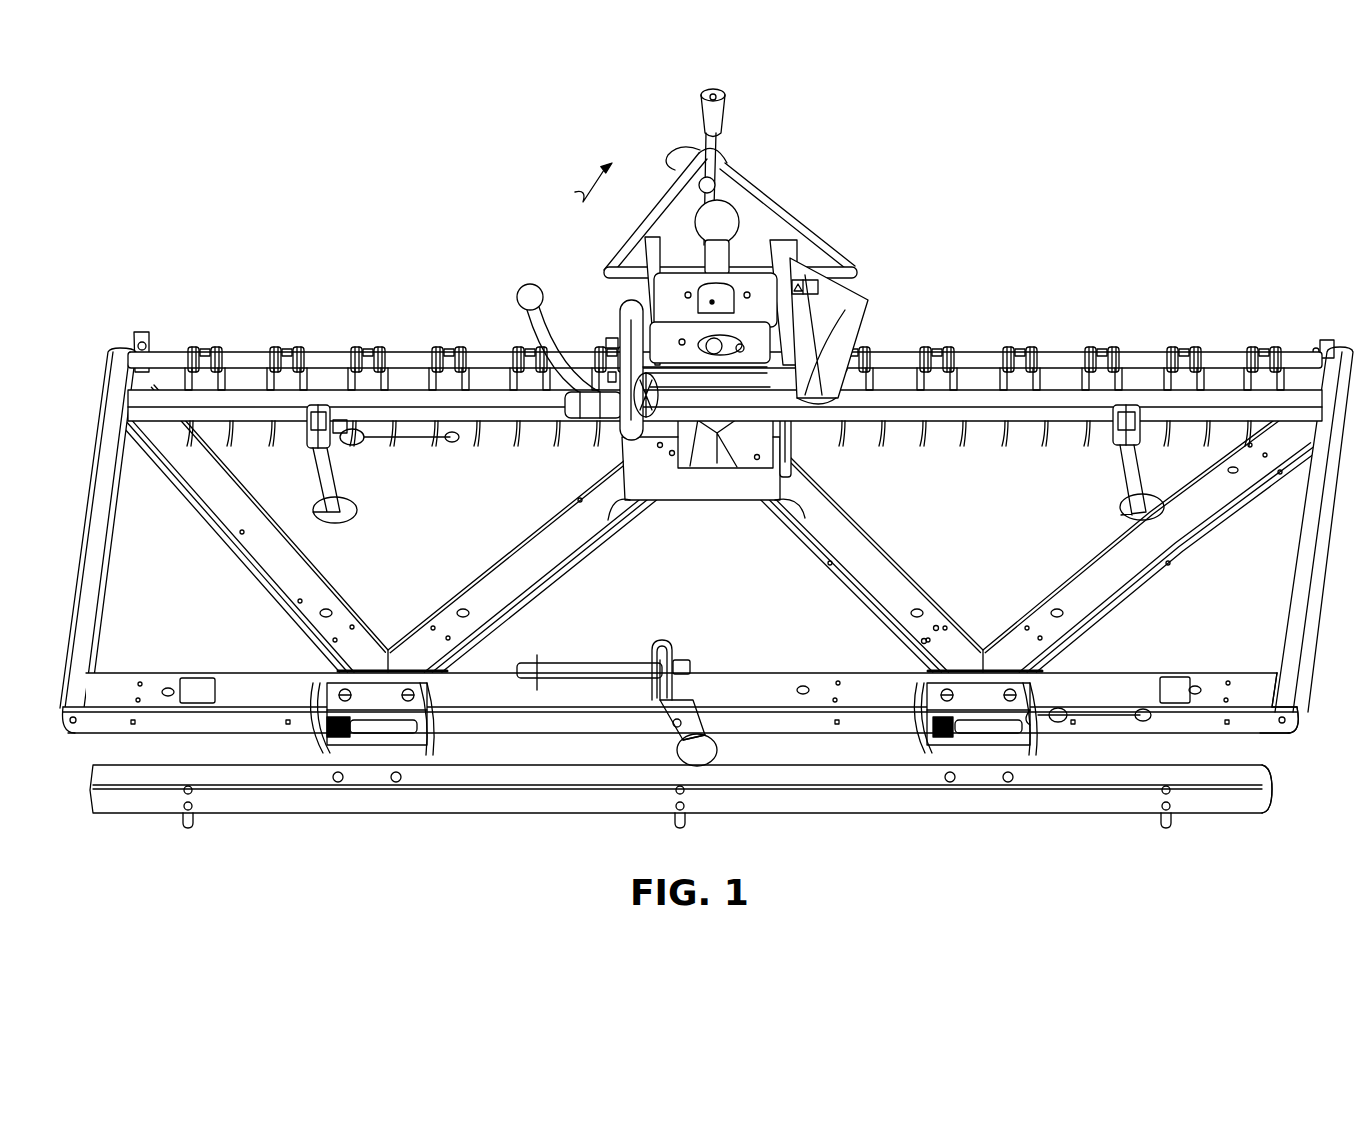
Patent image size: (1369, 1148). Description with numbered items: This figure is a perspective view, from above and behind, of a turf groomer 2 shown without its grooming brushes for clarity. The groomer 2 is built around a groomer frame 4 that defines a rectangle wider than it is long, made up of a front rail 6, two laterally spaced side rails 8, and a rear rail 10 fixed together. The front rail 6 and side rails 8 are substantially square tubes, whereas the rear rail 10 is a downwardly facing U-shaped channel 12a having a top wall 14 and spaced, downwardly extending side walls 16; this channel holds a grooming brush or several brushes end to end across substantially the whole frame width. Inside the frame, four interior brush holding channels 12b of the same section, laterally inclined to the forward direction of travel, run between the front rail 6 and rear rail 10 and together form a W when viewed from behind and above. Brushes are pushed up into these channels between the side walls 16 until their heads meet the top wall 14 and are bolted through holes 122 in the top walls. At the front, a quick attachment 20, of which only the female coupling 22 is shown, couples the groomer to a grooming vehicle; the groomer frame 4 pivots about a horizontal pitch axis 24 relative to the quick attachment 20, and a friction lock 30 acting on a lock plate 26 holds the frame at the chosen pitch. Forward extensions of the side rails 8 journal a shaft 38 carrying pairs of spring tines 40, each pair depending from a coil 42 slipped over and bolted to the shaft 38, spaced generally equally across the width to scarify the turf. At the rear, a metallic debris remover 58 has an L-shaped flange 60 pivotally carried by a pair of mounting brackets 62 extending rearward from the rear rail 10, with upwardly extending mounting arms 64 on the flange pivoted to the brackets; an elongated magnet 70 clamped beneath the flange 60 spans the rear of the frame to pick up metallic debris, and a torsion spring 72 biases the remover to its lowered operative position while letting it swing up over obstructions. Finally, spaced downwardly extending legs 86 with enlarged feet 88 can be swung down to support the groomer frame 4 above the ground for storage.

The turf groomer 2 is at (1011, 262).
The groomer frame 4 is at (90, 396).
The front rail 6 is at (1063, 400).
The side rails 8 is at (97, 566).
The rear rail 10 is at (74, 742).
The U-shaped channel 12a is at (764, 660).
The interior brush holding channels 12b is at (460, 579).
The top wall 14 is at (1207, 689).
The side walls 16 is at (1268, 735).
The quick attachment 20 is at (776, 157).
The female coupling 22 is at (777, 204).
The horizontal pitch axis 24 is at (772, 391).
The lock plate 26 is at (625, 333).
The friction lock 30 is at (510, 308).
The shaft 38 is at (1138, 350).
The spring tines 40 is at (240, 444).
The coil 42 is at (208, 348).
The metallic debris remover 58 is at (540, 827).
The L-shaped flange 60 is at (752, 798).
The mounting brackets 62 is at (380, 698).
The mounting arms 64 is at (903, 762).
The elongated magnet 70 is at (1270, 796).
The torsion spring 72 is at (345, 737).
The legs 86 is at (334, 470).
The feet 88 is at (354, 513).
The holes 122 is at (922, 641).